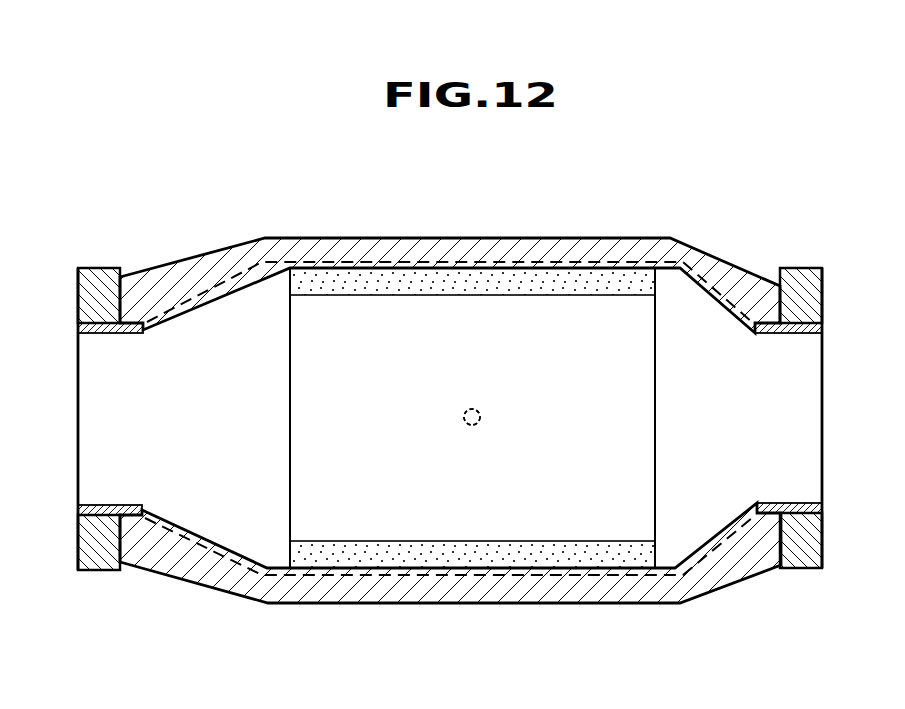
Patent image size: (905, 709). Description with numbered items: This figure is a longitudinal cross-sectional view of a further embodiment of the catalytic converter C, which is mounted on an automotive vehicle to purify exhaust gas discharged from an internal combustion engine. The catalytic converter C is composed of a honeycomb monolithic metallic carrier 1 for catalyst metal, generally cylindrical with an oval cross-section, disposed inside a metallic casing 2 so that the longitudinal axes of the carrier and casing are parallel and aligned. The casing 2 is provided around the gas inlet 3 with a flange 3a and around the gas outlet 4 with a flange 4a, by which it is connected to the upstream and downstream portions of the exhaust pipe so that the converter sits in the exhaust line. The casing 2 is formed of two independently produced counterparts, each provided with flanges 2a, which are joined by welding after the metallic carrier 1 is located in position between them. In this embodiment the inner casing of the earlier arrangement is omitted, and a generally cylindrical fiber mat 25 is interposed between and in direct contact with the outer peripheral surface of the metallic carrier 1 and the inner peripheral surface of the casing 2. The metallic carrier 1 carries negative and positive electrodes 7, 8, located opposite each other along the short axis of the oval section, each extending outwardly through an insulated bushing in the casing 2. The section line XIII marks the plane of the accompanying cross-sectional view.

The honeycomb monolithic metallic carrier 1 is at (575, 516).
The metallic casing 2 is at (192, 557).
The flanges of casing counterparts 2a is at (320, 252).
The gas inlet 3 is at (93, 378).
The flange 3a is at (107, 550).
The gas outlet 4 is at (808, 375).
The flange 4a is at (795, 550).
The negative electrode 7 is at (478, 410).
The positive electrode 8 is at (472, 417).
The fiber mat 25 is at (520, 277).
The catalytic converter C is at (661, 224).
The section line XIII is at (470, 183).